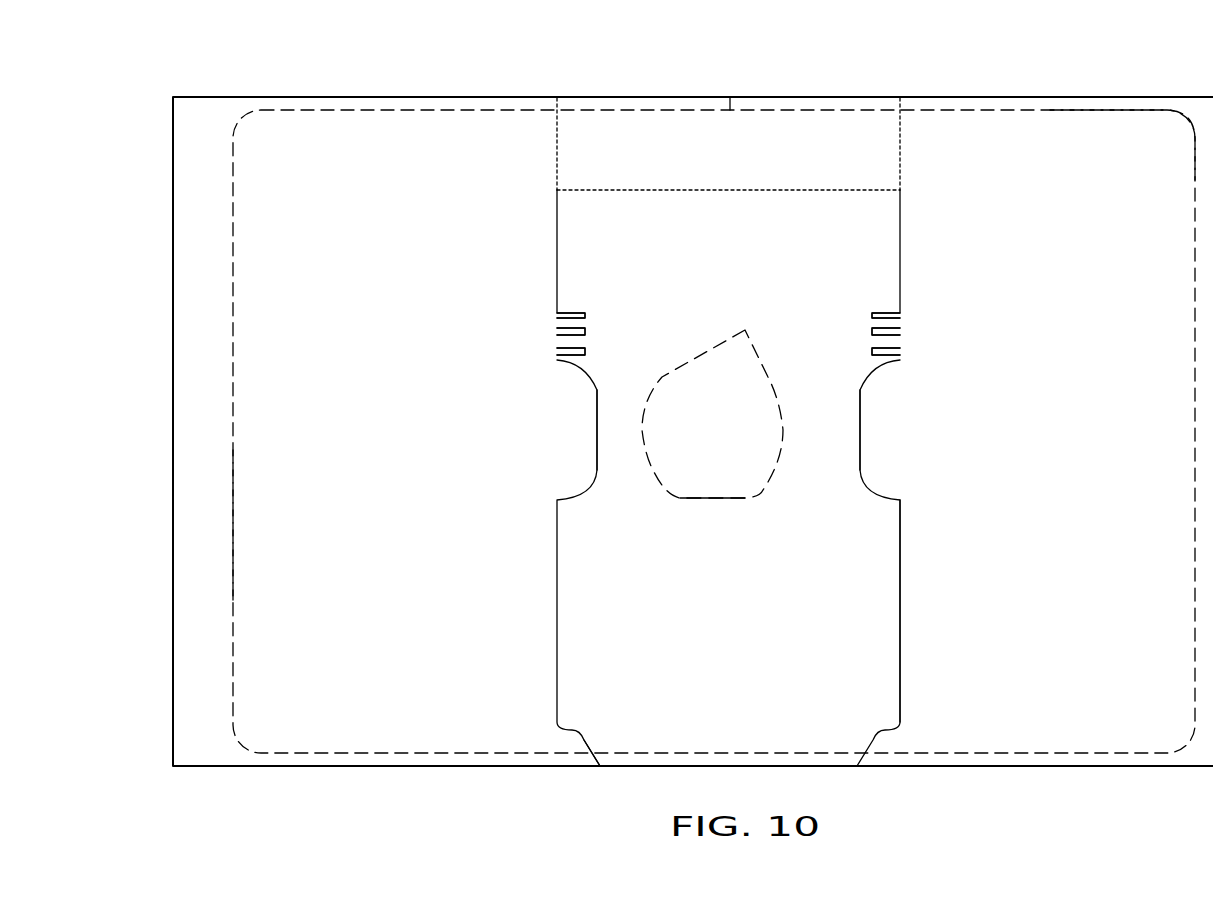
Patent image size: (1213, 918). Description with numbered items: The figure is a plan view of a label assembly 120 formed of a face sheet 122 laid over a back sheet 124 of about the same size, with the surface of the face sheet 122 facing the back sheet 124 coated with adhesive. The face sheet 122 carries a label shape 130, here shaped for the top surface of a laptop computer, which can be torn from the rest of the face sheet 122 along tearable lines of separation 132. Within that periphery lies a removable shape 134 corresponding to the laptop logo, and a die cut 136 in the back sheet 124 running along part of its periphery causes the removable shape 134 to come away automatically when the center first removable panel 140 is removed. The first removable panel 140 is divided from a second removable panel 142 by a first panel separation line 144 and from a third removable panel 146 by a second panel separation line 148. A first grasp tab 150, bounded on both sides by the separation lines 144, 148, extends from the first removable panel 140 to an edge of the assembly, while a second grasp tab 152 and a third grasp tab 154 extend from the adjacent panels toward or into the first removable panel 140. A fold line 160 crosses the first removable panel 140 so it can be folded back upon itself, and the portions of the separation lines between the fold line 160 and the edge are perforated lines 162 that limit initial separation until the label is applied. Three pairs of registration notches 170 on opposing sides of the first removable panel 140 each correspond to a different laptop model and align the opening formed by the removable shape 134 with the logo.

The label assembly 120 is at (462, 56).
The face sheet 122 is at (218, 120).
The back sheet 124 is at (193, 197).
The label shape 130 is at (265, 260).
The tearable lines of separation 132 is at (233, 370).
The removable shape 134 is at (768, 365).
The die cut 136 is at (700, 500).
The first removable panel 140 is at (867, 550).
The second removable panel 142 is at (205, 555).
The first panel separation line 144 is at (556, 583).
The third removable panel 146 is at (1112, 125).
The second panel separation line 148 is at (900, 645).
The first grasp tab 150 is at (610, 757).
The second grasp tab 152 is at (583, 470).
The third grasp tab 154 is at (868, 465).
The fold line 160 is at (742, 190).
The perforated line 162 is at (556, 152).
The registration notches 170 is at (588, 315).